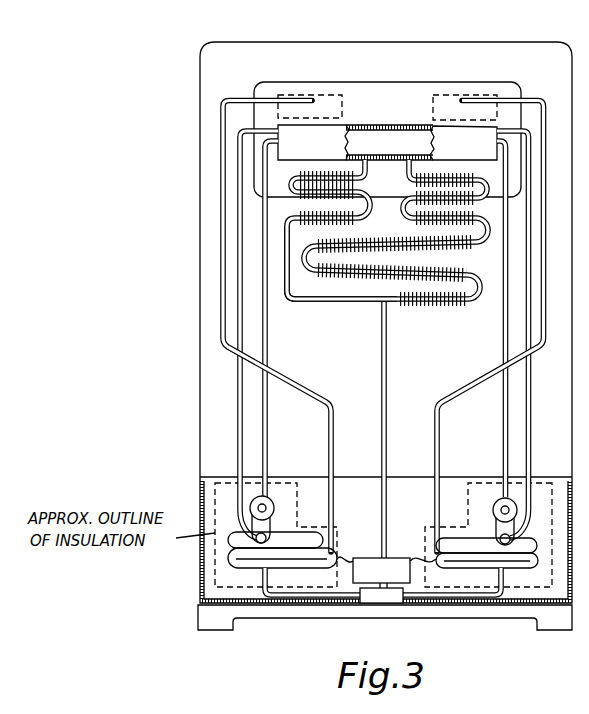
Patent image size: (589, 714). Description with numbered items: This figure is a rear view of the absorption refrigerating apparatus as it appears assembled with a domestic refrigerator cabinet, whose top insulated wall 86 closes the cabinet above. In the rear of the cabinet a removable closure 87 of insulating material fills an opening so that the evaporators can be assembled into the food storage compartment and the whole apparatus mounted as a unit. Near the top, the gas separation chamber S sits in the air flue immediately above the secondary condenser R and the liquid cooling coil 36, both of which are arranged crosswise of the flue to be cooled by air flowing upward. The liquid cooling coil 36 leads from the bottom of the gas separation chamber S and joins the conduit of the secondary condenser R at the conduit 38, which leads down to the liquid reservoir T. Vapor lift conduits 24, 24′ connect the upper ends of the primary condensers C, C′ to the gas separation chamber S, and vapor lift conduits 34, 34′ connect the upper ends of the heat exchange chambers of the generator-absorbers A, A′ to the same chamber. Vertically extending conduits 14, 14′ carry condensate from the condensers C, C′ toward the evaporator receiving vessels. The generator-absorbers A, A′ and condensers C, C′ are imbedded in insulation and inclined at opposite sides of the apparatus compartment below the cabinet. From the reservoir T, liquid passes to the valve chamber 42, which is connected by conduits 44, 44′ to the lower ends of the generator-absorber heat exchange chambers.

The top insulated wall 86 is at (345, 45).
The removable closure 87 is at (417, 93).
The gas separation chamber S is at (387, 142).
The secondary condenser R is at (456, 247).
The liquid cooling coil 36 is at (310, 301).
The conduit 38 is at (387, 338).
The vertically extending conduit 14 is at (452, 398).
The vertically extending conduit 14′ is at (313, 396).
The vapor lift conduit 24 is at (532, 430).
The vapor lift conduit 24′ is at (238, 440).
The vapor lift conduit 34 is at (503, 430).
The vapor lift conduit 34′ is at (268, 428).
The generator-absorber A is at (493, 513).
The generator-absorber A′ is at (274, 511).
The liquid reservoir T is at (365, 557).
The primary condenser C is at (475, 567).
The primary condenser C′ is at (296, 567).
The conduit 44 is at (462, 598).
The conduit 44′ is at (302, 598).
The valve chamber 42 is at (375, 604).